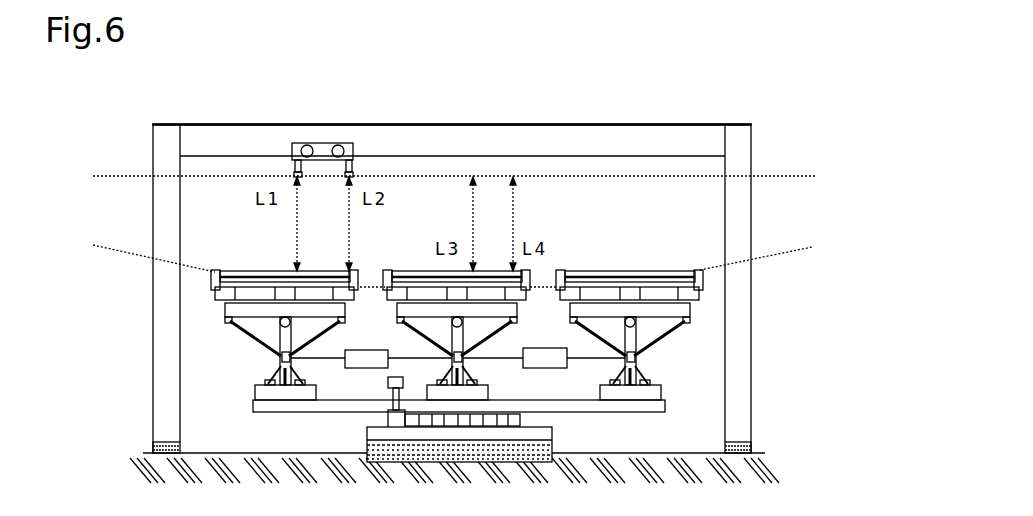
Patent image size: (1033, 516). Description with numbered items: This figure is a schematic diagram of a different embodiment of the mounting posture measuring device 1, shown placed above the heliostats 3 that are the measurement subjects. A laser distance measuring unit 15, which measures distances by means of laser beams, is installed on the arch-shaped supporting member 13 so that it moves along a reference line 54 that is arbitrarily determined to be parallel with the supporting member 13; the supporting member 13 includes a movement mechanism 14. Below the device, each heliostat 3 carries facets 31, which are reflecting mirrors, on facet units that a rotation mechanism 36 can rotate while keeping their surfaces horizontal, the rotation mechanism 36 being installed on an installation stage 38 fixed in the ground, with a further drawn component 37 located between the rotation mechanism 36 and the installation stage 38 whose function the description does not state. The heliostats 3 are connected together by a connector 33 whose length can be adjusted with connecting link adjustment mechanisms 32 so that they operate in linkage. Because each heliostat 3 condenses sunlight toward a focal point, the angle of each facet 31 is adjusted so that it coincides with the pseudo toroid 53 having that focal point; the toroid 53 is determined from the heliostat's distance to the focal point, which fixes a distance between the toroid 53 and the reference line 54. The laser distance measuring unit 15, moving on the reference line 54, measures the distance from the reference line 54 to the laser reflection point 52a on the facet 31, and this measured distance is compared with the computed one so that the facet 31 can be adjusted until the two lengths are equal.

The mounting posture measuring device 1 is at (718, 82).
The heliostat 3 is at (472, 406).
The supporting member 13 is at (165, 128).
The movement mechanism 14 is at (752, 442).
The laser distance measuring unit 15 is at (327, 147).
The facet 31 is at (640, 275).
The connecting link adjustment mechanism 32 is at (362, 363).
The connector 33 is at (244, 328).
The rotation mechanism 36 is at (517, 418).
The actuator 37 is at (393, 425).
The installation stage 38 is at (478, 487).
The laser reflection point 52a is at (297, 271).
The toroid 53 is at (805, 249).
The reference line 54 is at (563, 173).